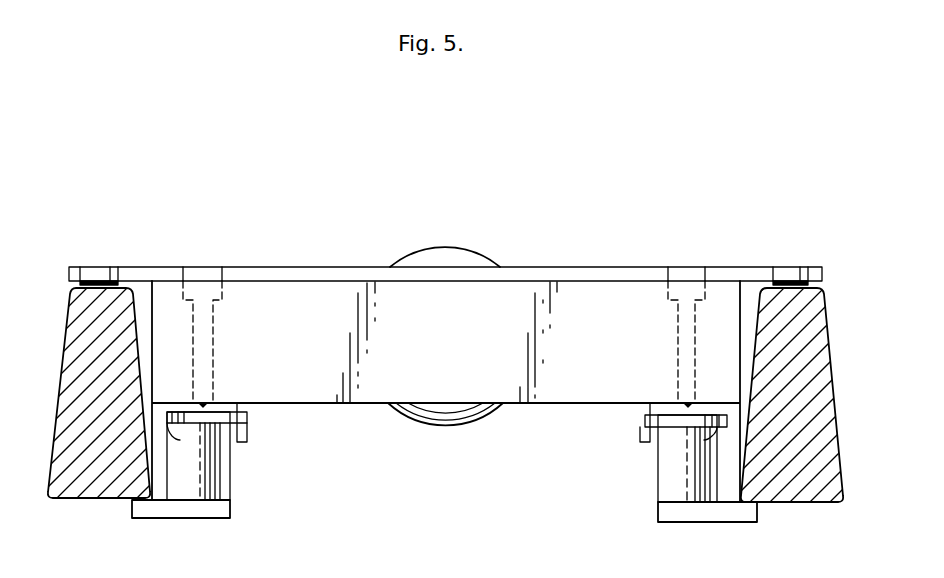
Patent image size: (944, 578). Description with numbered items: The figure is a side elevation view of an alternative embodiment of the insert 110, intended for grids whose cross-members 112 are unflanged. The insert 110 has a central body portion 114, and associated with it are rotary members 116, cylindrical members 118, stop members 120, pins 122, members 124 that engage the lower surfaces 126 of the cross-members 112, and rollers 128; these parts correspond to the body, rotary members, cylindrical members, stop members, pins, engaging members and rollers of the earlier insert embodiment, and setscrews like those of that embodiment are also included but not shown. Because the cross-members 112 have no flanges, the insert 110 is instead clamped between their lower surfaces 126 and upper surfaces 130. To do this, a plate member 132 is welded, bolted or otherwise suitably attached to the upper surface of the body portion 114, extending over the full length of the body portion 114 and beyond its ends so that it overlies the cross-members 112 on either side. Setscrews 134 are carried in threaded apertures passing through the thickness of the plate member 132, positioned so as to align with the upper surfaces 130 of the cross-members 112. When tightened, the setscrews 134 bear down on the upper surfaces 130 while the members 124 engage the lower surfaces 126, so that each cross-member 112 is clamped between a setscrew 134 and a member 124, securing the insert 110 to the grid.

The insert 110 is at (576, 230).
The unflanged cross-member 112 is at (68, 365).
The body portion 114 is at (462, 362).
The rotary member 116 is at (213, 335).
The cylindrical member 118 is at (230, 477).
The stop member 120 is at (177, 452).
The pin 122 is at (248, 425).
The member for engaging the lower surfaces of cross-members 124 is at (165, 520).
The lower surface of cross-member 126 is at (107, 500).
The roller 128 is at (446, 249).
The upper surface of cross-member 130 is at (78, 268).
The plate member 132 is at (328, 270).
The setscrew 134 is at (113, 268).